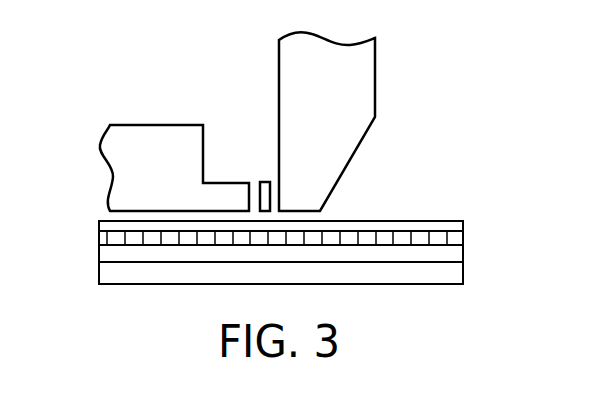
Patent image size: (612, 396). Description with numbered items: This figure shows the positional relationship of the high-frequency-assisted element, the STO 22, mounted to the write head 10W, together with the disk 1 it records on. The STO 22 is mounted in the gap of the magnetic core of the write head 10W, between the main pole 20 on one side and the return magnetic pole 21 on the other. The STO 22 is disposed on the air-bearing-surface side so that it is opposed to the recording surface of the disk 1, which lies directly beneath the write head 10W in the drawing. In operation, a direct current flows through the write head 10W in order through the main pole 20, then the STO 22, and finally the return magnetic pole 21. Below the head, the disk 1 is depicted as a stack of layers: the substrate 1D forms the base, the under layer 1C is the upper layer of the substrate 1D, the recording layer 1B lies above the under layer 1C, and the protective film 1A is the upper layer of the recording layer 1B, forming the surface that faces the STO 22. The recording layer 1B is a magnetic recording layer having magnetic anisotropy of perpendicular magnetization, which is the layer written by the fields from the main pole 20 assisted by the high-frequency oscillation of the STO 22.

The write head 10W is at (170, 78).
The main pole 20 is at (370, 90).
The return magnetic pole 21 is at (108, 175).
The STO 22 is at (265, 182).
The disk 1 is at (314, 250).
The protective film 1A is at (428, 221).
The recording layer 1B is at (463, 237).
The under layer 1C is at (463, 253).
The substrate 1D is at (428, 278).